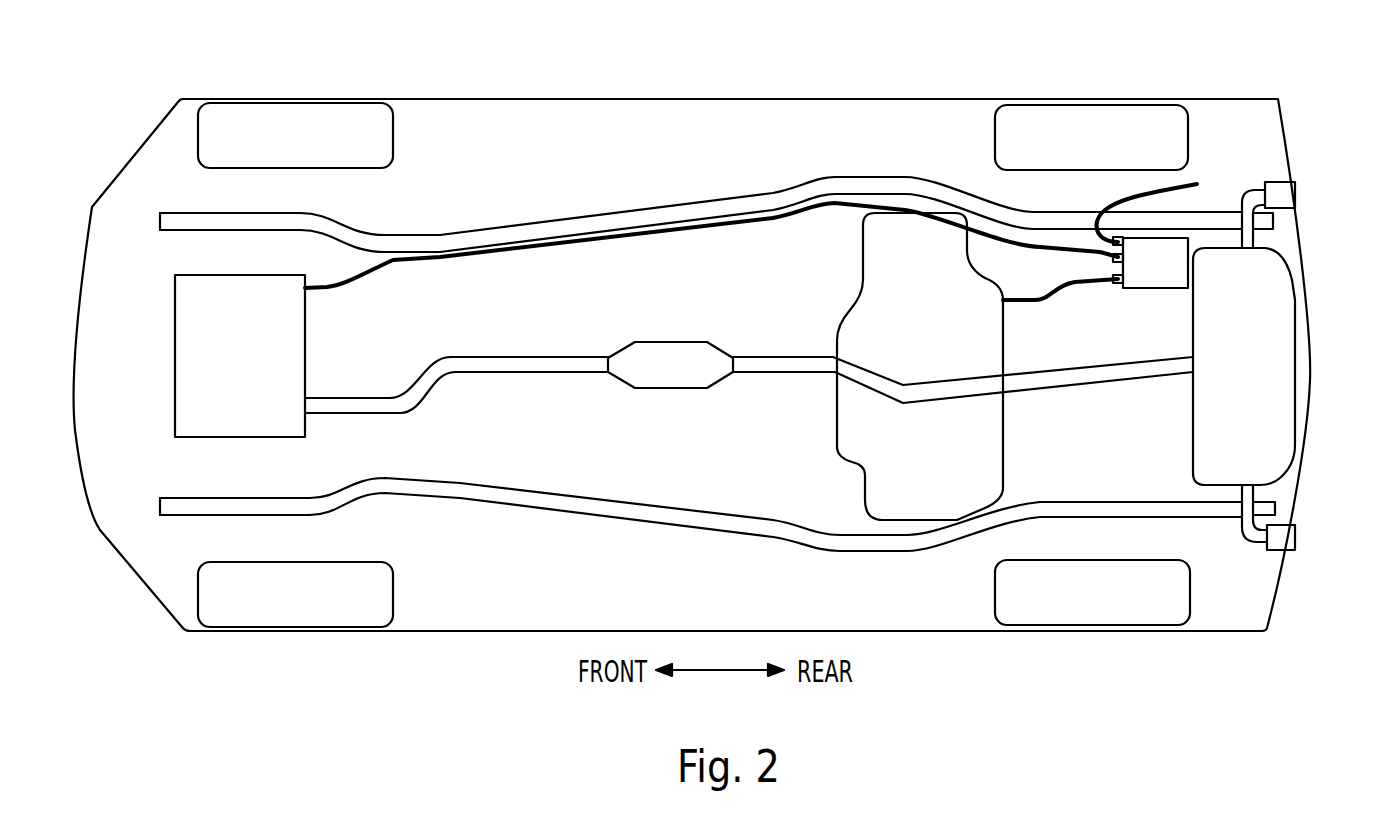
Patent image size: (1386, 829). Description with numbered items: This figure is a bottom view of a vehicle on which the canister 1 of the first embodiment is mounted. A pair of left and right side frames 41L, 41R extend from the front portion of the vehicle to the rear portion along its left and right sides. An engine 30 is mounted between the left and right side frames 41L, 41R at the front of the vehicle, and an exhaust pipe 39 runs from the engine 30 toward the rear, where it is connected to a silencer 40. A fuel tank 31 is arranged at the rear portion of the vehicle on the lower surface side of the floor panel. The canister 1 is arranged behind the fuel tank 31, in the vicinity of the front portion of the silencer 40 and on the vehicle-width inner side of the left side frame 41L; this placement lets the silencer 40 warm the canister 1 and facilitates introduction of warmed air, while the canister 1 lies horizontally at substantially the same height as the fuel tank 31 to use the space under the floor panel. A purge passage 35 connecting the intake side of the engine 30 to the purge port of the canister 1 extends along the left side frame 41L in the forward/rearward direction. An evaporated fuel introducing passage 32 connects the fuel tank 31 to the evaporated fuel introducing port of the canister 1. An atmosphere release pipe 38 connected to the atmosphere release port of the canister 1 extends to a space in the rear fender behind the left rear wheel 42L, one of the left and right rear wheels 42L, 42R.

The canister 1 is at (1130, 292).
The engine 30 is at (175, 318).
The fuel tank 31 is at (868, 259).
The evaporated fuel introducing passage 32 is at (1055, 302).
The purge passage 35 is at (358, 283).
The atmosphere release pipe 38 is at (1150, 193).
The exhaust pipe 39 is at (530, 358).
The silencer 40 is at (1298, 383).
The left side frame 41L is at (655, 213).
The right side frame 41R is at (632, 522).
The left rear wheel 42L is at (1157, 115).
The right rear wheel 42R is at (1126, 615).